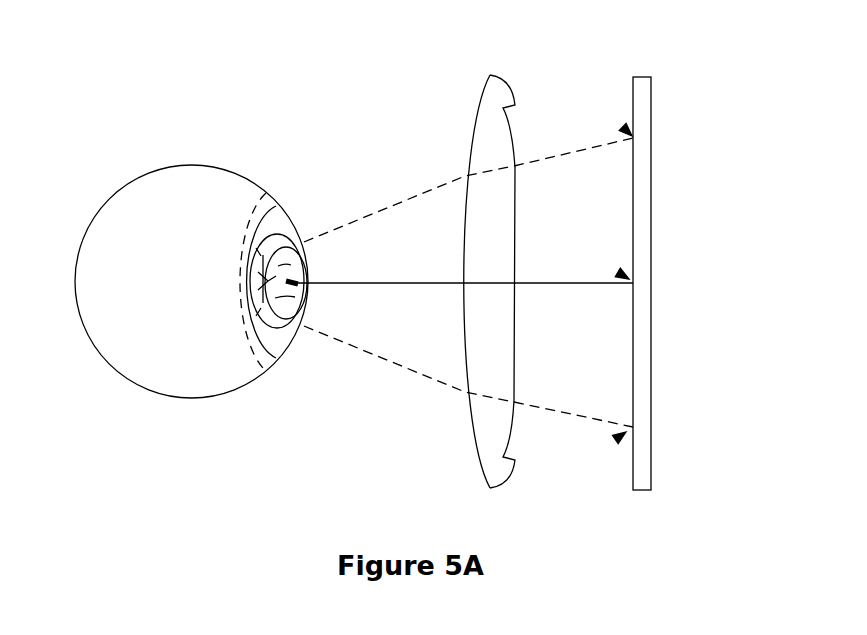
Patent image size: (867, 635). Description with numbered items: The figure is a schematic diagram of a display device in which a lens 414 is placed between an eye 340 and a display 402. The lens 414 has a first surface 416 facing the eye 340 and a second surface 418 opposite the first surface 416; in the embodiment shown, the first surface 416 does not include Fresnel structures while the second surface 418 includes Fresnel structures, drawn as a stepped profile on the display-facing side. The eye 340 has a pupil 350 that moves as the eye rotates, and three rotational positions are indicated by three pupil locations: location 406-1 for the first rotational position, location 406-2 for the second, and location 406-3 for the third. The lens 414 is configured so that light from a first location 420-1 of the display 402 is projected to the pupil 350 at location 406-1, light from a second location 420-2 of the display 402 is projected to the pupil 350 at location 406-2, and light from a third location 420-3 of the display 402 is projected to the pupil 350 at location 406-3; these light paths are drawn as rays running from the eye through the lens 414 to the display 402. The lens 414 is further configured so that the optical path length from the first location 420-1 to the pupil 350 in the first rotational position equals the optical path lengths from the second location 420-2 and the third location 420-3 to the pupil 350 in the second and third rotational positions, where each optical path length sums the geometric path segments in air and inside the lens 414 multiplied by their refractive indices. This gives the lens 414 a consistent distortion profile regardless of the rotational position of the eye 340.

The eye 340 is at (147, 178).
The pupil 350 is at (307, 307).
The display 402 is at (652, 180).
The location 406-1 is at (287, 340).
The location 406-2 is at (306, 265).
The location 406-3 is at (272, 222).
The lens 414 is at (462, 266).
The first surface 416 is at (470, 152).
The second surface 418 is at (513, 133).
The first location 420-1 is at (618, 437).
The second location 420-2 is at (620, 276).
The third location 420-3 is at (626, 130).